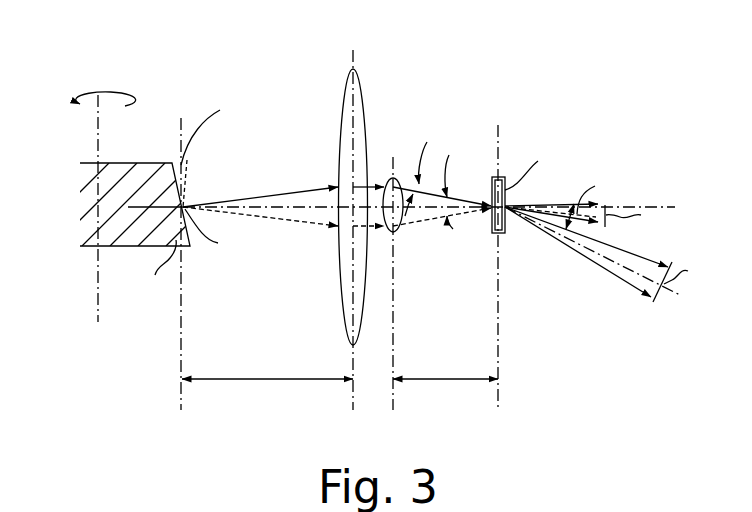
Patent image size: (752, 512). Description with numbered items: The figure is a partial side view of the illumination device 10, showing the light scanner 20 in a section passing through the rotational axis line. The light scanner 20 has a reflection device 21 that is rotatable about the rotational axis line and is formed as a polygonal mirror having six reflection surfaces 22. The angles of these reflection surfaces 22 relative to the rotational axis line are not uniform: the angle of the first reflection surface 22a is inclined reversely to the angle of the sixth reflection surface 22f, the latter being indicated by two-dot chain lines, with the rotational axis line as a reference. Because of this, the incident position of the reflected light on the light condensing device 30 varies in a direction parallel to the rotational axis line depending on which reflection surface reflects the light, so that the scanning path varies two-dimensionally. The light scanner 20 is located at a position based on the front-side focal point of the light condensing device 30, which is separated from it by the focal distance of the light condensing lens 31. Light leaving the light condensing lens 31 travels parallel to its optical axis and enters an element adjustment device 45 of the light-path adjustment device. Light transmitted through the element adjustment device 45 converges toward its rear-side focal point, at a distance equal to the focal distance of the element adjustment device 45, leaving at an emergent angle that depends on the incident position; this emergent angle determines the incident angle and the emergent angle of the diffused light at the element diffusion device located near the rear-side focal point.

The illumination device 10 is at (573, 78).
The light scanner 20 is at (137, 212).
The reflection device 21 is at (83, 285).
The reflection surfaces 22 is at (213, 250).
The first reflection surface 22a is at (213, 250).
The sixth reflection surface 22f is at (192, 176).
The light condensing device 30 is at (330, 216).
The light condensing lens 31 is at (343, 68).
The element adjustment device 45 is at (393, 283).